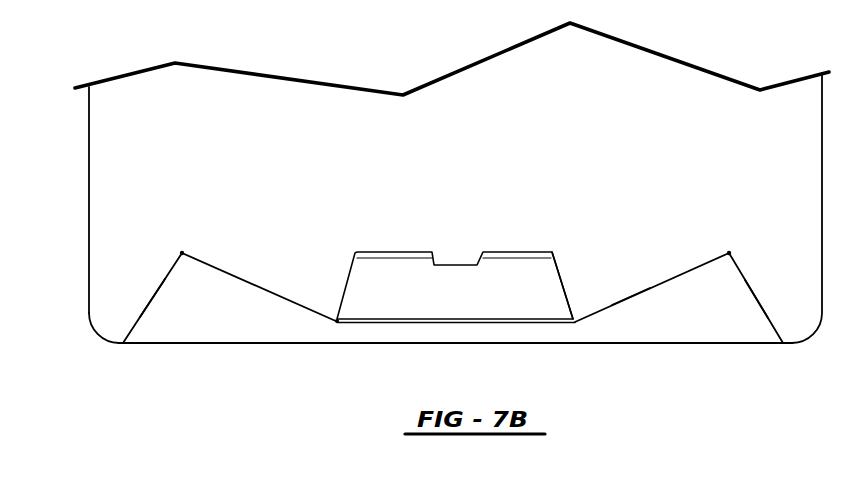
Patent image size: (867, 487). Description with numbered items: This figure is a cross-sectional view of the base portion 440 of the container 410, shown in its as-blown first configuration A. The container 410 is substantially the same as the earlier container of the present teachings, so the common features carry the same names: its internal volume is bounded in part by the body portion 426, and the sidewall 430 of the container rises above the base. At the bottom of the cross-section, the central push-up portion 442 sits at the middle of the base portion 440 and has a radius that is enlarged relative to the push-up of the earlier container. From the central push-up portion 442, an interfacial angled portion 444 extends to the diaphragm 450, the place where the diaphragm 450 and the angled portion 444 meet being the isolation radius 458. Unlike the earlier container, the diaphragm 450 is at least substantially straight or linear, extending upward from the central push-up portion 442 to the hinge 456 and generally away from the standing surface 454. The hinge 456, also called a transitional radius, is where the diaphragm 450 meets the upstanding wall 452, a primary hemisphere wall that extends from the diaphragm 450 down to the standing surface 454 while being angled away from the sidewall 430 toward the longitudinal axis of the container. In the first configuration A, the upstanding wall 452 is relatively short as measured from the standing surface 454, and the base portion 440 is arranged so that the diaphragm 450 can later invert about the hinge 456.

The container 410 is at (63, 111).
The sidewall 430 is at (89, 205).
The body portion 426 is at (89, 286).
The base portion 440 is at (273, 354).
The central push-up portion 442 is at (453, 263).
The angled portion 444 is at (563, 287).
The diaphragm 450 is at (247, 280).
The upstanding wall 452 is at (148, 302).
The standing surface 454 is at (125, 343).
The hinge 456 is at (182, 253).
The isolation radius 458 is at (336, 322).
The first configuration A is at (630, 300).